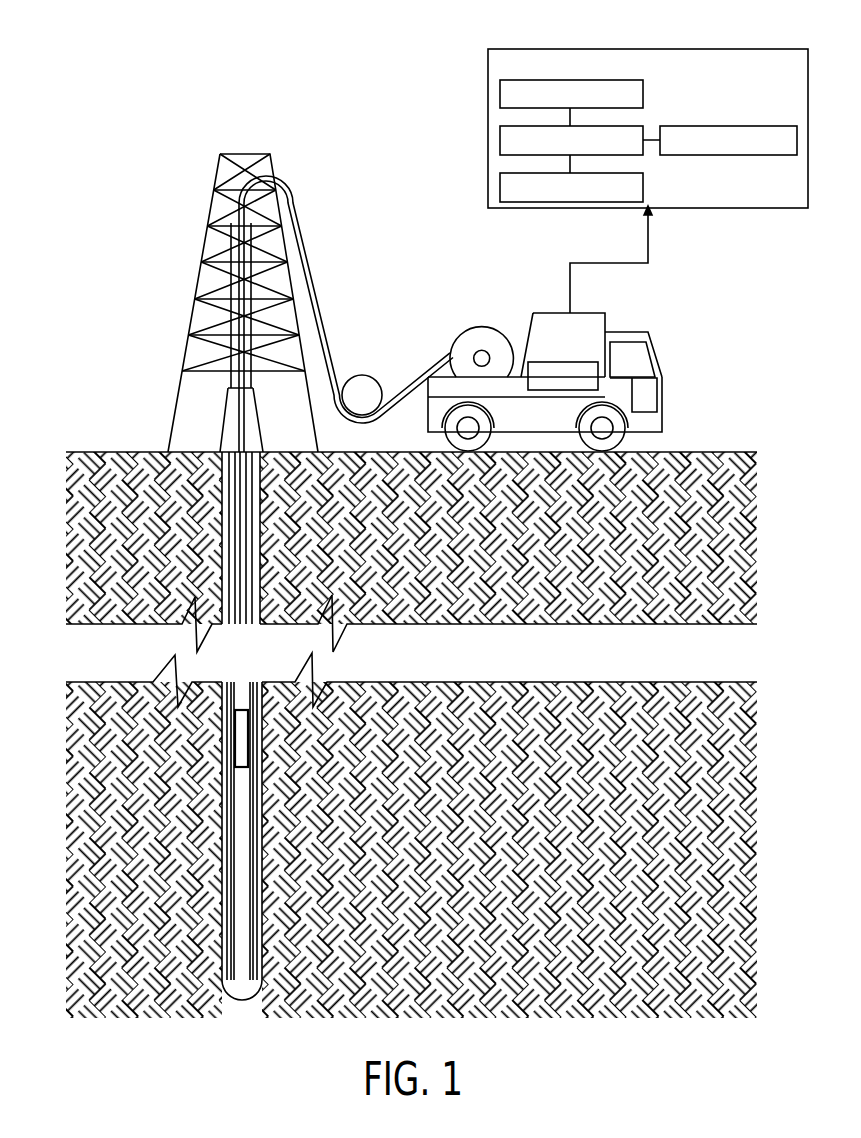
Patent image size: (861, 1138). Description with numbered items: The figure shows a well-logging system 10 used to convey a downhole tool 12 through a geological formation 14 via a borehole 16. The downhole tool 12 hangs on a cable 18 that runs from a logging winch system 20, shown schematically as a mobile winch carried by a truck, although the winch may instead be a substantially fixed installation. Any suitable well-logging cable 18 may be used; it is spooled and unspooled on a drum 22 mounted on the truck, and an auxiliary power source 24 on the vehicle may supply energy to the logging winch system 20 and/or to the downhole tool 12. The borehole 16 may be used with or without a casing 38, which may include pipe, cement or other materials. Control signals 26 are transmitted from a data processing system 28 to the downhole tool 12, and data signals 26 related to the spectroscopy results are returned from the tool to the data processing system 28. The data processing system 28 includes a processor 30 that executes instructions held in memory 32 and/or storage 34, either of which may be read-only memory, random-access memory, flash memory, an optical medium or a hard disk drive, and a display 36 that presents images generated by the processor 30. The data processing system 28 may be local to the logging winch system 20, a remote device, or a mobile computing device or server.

The well-logging system 10 is at (134, 210).
The downhole tool 12 is at (233, 708).
The geological formation 14 is at (75, 785).
The borehole 16 is at (222, 503).
The cable 18 is at (340, 300).
The logging winch system 20 is at (550, 307).
The drum 22 is at (474, 330).
The auxiliary power source 24 is at (562, 362).
The control signals / data signals 26 is at (653, 236).
The data processing system 28 is at (625, 115).
The processor 30 is at (623, 126).
The memory 32 is at (500, 93).
The storage 34 is at (638, 186).
The display 36 is at (727, 126).
The casing 38 is at (217, 962).